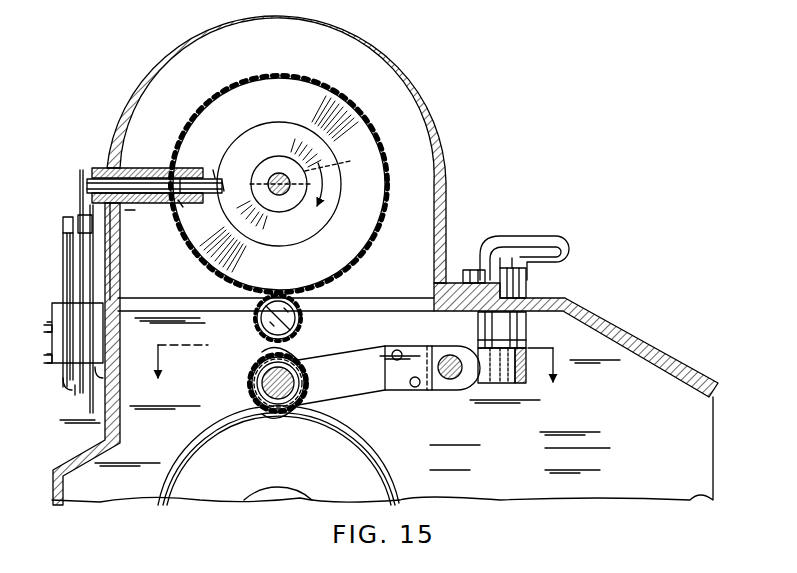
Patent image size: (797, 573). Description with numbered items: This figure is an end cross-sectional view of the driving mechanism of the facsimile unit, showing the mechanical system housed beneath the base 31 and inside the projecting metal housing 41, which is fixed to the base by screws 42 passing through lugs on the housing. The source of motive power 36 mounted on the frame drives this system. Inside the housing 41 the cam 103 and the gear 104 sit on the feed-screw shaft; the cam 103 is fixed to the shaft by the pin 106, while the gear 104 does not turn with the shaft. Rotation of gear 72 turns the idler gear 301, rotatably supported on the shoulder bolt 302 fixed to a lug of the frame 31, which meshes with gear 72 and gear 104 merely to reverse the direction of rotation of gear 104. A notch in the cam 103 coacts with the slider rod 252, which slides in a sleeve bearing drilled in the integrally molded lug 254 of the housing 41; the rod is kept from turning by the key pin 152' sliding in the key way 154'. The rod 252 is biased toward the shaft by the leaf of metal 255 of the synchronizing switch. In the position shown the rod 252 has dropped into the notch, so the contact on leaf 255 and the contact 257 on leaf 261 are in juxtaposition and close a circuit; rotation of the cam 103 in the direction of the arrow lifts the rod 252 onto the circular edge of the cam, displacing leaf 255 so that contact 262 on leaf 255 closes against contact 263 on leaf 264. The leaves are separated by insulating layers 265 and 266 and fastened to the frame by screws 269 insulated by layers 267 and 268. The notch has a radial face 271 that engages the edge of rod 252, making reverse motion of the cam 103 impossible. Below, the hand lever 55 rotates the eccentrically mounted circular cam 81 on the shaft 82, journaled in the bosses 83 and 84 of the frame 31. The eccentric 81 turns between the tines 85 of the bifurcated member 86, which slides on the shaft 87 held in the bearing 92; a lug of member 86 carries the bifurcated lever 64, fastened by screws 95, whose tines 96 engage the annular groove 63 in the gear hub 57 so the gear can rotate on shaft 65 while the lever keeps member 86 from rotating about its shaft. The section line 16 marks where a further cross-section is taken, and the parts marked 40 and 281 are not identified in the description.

The projecting metal housing 41 is at (348, 38).
The base 31 is at (628, 334).
The lug 254 is at (105, 168).
The slider rod 252 is at (127, 181).
The shaft end 281 is at (224, 190).
The contact 263 is at (133, 165).
The contact 262 is at (78, 218).
The leaf of metal 255 is at (80, 172).
The insulating layer 266 is at (90, 207).
The leaf 264 is at (64, 258).
The contact 257 is at (90, 237).
The leaf 261 is at (88, 252).
The key way 154' is at (144, 215).
The key pin 152' is at (199, 211).
The radial face 271 is at (215, 175).
The screws 269 is at (48, 357).
The insulating layer 268 is at (63, 372).
The insulating layer 265 is at (76, 391).
The insulating layer 267 is at (104, 372).
The gear 104 is at (386, 163).
The cam 103 is at (340, 177).
The pin 106 is at (339, 177).
The shaft 40 is at (281, 174).
The shoulder bolt 302 is at (300, 318).
The idler gear 301 is at (299, 322).
The gear 72 is at (247, 376).
The annular groove 63 is at (257, 383).
The shaft 65 is at (296, 374).
The gear hub 57 is at (302, 387).
The tines 96 is at (265, 352).
The bifurcated lever 64 is at (403, 368).
The bearing 92 is at (433, 331).
The screws 95 is at (398, 361).
The bifurcated member 86 is at (467, 346).
The shaft 87 is at (449, 380).
The boss 84 is at (527, 329).
The shaft 82 is at (527, 338).
The tines 85 is at (508, 383).
The eccentric 81 is at (526, 381).
The boss 83 is at (527, 288).
The screws 42 is at (470, 270).
The hand lever 55 is at (561, 238).
The section line 16 is at (361, 375).
The source of motive power 36 is at (260, 469).